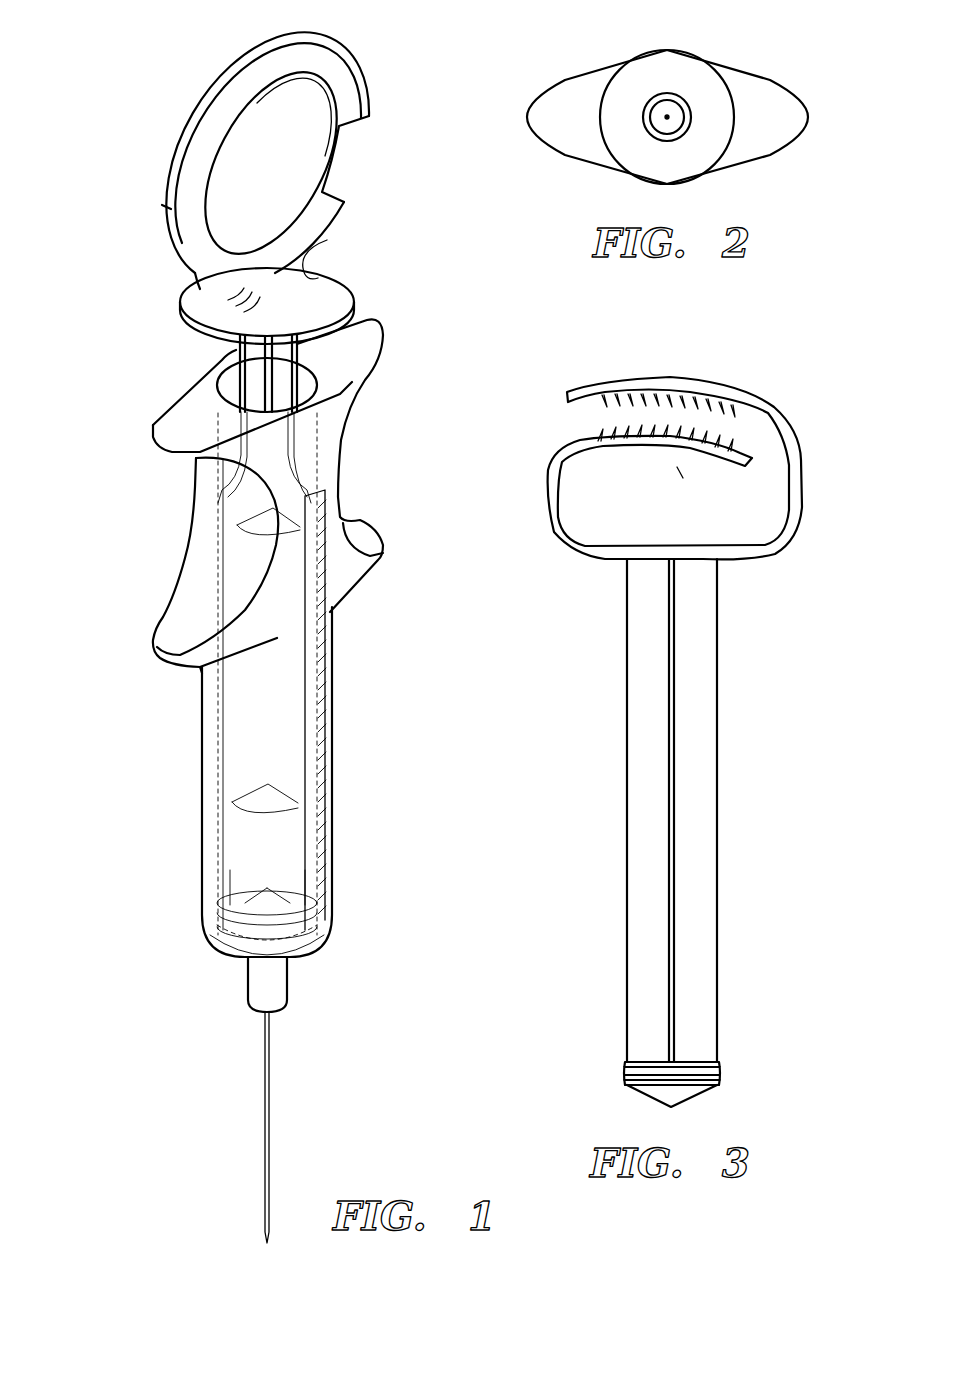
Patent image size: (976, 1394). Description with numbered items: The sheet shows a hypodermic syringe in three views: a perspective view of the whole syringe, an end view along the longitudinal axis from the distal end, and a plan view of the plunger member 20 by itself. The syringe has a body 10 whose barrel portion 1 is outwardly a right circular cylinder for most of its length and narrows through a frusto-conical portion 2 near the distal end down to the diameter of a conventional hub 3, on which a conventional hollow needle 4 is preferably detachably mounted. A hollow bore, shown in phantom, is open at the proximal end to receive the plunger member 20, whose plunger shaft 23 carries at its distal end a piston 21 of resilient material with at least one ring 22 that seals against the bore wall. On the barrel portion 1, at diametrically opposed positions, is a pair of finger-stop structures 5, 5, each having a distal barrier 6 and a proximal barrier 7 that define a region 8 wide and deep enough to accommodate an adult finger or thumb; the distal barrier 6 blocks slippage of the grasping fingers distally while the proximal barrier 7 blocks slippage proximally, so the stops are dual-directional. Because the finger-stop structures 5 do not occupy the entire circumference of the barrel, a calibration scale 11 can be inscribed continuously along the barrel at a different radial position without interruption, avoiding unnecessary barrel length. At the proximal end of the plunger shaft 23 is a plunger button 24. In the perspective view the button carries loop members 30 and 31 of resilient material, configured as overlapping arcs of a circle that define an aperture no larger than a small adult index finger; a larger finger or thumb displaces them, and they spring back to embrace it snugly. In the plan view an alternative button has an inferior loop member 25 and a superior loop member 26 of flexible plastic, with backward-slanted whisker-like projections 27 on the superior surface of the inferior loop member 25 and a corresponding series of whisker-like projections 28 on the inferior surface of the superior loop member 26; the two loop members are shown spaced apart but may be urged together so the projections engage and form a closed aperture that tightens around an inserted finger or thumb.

In FIG. 1, the barrel portion 1 is at (200, 900).
In FIG. 1, the frusto-conical portion 2 is at (220, 953).
In FIG. 2, the frusto-conical portion 2 is at (633, 150).
In FIG. 1, the hub 3 is at (247, 988).
In FIG. 2, the hub 3 is at (690, 97).
In FIG. 1, the hollow needle 4 is at (265, 1097).
In FIG. 2, the hollow needle 4 is at (667, 115).
In FIG. 1, the finger-stop structures 5 is at (80, 497).
In FIG. 2, the finger-stop structures 5 is at (568, 78).
In FIG. 1, the distal barrier 6 is at (163, 658).
In FIG. 1, the proximal barrier 7 is at (163, 460).
In FIG. 1, the region 8 is at (207, 590).
In FIG. 1, the body 10 is at (403, 463).
In FIG. 1, the calibration scale 11 is at (322, 692).
In FIG. 1, the plunger member 20 is at (250, 378).
In FIG. 3, the plunger member 20 is at (820, 382).
In FIG. 3, the piston 21 is at (640, 1090).
In FIG. 3, the ring 22 is at (627, 1078).
In FIG. 3, the plunger shaft 23 is at (627, 643).
In FIG. 1, the plunger button 24 is at (278, 275).
In FIG. 3, the plunger button 24 is at (647, 545).
In FIG. 3, the inferior loop member 25 is at (548, 505).
In FIG. 3, the superior loop member 26 is at (725, 385).
In FIG. 3, the whisker-like projections 27 is at (598, 432).
In FIG. 3, the whisker-like projections 28 is at (600, 400).
In FIG. 1, the loop member 30 is at (197, 108).
In FIG. 1, the loop member 31 is at (350, 70).